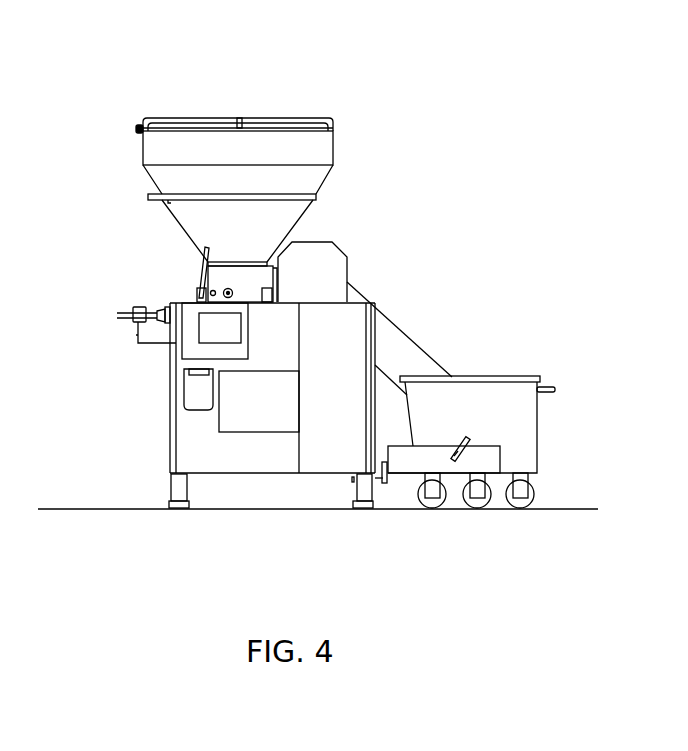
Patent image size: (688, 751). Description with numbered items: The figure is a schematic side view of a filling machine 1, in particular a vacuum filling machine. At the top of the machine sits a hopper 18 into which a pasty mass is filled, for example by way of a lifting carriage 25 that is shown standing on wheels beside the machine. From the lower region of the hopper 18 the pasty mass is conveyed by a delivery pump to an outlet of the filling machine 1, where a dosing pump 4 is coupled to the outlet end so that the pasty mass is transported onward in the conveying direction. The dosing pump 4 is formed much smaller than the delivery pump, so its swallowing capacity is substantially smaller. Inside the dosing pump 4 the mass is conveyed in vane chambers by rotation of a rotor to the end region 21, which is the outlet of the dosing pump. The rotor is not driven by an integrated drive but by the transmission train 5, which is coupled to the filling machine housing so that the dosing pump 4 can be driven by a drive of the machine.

The filling machine 1 is at (293, 81).
The hopper 18 is at (333, 145).
The dosing pump 4 is at (137, 304).
The end region 21 is at (118, 313).
The transmission train 5 is at (136, 335).
The lifting carriage 25 is at (527, 425).